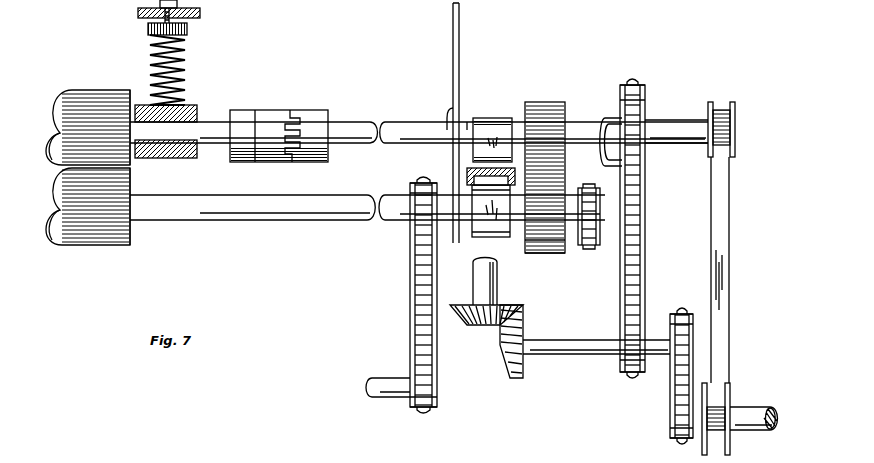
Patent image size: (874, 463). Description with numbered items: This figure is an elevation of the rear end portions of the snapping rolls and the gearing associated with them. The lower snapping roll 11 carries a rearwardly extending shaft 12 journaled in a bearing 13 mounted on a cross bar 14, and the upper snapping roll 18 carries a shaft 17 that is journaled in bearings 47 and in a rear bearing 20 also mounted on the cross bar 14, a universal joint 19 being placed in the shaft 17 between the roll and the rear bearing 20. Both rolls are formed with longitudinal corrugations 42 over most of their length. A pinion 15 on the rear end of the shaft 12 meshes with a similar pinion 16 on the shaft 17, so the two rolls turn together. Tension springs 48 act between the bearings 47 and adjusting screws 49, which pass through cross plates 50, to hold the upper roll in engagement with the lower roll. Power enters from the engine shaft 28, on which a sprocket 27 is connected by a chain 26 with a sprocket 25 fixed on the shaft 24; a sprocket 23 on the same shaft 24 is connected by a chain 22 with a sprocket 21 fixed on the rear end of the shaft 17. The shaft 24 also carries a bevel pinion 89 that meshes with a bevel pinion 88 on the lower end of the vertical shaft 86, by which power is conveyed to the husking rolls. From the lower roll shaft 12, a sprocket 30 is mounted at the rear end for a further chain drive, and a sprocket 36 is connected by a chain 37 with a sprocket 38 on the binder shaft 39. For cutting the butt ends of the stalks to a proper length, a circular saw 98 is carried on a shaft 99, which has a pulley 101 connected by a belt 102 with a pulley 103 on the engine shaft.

The lower snapping roll 11 is at (100, 232).
The shaft 12 is at (238, 218).
The bearing 13 is at (477, 236).
The cross bar 14 is at (467, 174).
The pinion 15 is at (548, 251).
The pinion 16 is at (554, 108).
The shaft 17 is at (353, 124).
The upper snapping roll 18 is at (96, 96).
The universal joint 19 is at (288, 110).
The rear bearing 20 is at (492, 120).
The sprocket 21 is at (644, 97).
The chain 22 is at (647, 245).
The sprocket 23 is at (625, 368).
The shaft 24 is at (582, 354).
The sprocket 25 is at (680, 312).
The chain 26 is at (670, 383).
The sprocket 27 is at (672, 425).
The engine shaft 28 is at (753, 406).
The sprocket 30 is at (590, 248).
The sprocket 36 is at (410, 190).
The chain 37 is at (410, 313).
The sprocket 38 is at (437, 402).
The binder shaft 39 is at (380, 380).
The longitudinal corrugations 42 is at (75, 112).
The bearings 47 is at (188, 110).
The tension springs 48 is at (178, 66).
The adjusting screws 49 is at (160, 4).
The cross plates 50 is at (201, 13).
The vertical shaft 86 is at (497, 280).
The bevel pinion 88 is at (463, 320).
The bevel pinion 89 is at (510, 374).
The circular saw 98 is at (460, 40).
The shaft 99 is at (681, 121).
The pulley 101 is at (735, 122).
The belt 102 is at (722, 202).
The pulley 103 is at (730, 447).